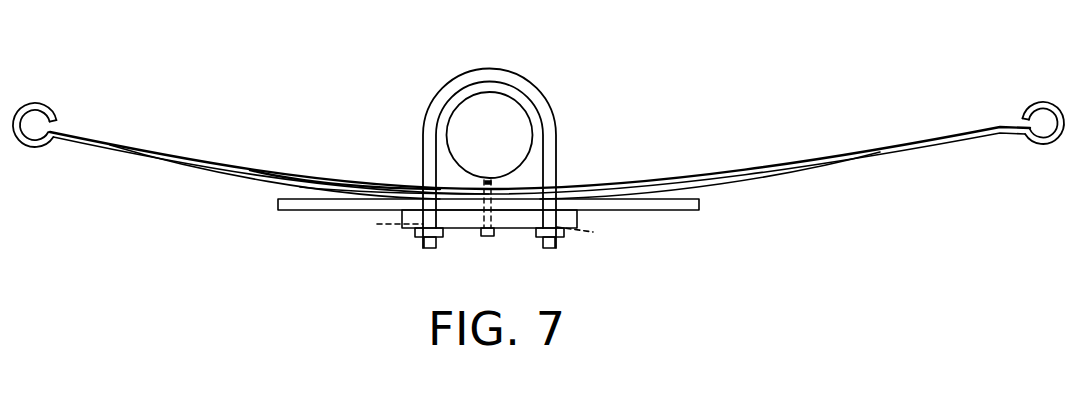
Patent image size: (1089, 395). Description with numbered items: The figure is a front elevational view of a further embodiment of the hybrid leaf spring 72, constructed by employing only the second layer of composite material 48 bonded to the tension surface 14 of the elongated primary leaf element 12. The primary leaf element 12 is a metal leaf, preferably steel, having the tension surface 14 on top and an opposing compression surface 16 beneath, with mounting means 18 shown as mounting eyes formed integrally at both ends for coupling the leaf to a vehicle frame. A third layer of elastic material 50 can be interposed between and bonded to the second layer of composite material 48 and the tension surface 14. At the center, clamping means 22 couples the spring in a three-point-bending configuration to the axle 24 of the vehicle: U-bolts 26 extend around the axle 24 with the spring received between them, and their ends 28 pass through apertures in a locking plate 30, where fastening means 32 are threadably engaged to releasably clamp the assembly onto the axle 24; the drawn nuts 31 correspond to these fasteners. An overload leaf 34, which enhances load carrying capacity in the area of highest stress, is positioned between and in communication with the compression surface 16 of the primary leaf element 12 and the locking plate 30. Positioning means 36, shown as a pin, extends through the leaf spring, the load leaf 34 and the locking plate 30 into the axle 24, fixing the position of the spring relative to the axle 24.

The elongated primary leaf element 12 is at (117, 144).
The tension surface 14 is at (370, 187).
The compression surface 16 is at (248, 182).
The mounting means 18 is at (51, 109).
The clamping means 22 is at (414, 67).
The axle 24 is at (522, 100).
The U-bolts 26 is at (557, 145).
The ends of the U-bolts 28 is at (430, 237).
The locking plate 30 is at (517, 218).
The nut 31 is at (415, 232).
The fastening means 32 is at (486, 232).
The load leaf 34 is at (310, 211).
The positioning means 36 is at (487, 237).
The second layer of composite material 48 is at (332, 179).
The third layer of elastic material 50 is at (217, 166).
The hybrid leaf spring 72 is at (660, 130).